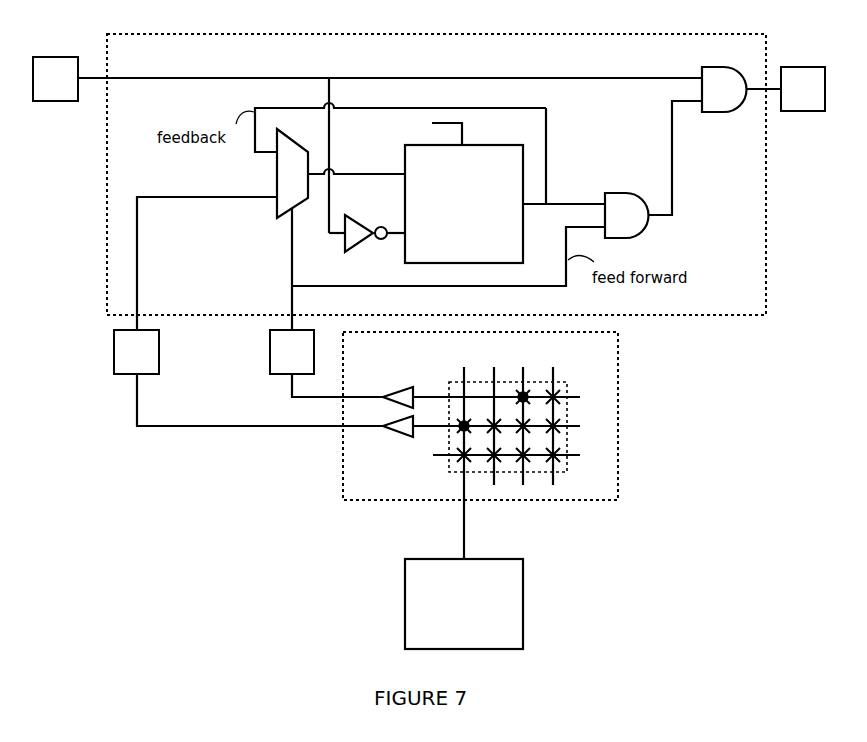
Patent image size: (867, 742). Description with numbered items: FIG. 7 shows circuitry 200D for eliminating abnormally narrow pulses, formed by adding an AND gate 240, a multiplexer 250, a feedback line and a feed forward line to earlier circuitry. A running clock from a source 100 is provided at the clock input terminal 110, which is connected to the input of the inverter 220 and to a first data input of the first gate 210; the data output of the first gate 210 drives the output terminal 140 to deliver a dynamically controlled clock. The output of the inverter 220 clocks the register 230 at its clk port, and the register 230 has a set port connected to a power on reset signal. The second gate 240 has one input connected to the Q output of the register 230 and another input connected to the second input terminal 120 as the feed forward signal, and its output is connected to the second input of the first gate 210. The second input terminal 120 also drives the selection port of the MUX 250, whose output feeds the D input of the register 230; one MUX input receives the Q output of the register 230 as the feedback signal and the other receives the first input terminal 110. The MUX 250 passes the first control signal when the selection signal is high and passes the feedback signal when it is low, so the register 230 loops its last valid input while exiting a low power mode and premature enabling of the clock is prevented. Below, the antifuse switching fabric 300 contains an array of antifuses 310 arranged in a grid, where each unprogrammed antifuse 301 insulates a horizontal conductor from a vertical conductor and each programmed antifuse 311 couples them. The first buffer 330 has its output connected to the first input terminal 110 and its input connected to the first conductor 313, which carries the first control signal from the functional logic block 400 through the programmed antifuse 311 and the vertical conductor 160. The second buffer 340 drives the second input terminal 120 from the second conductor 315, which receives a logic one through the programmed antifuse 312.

The input signal source 100 is at (71, 88).
The circuitry 200D is at (160, 61).
The first gate 210 is at (737, 98).
The output terminal 140 is at (818, 98).
The multiplexer 250 is at (276, 168).
The inverter 220 is at (350, 248).
The register 230 is at (477, 214).
The second gate 240 is at (640, 224).
The clock input terminal 110 is at (152, 361).
The second input terminal 120 is at (308, 361).
The antifuse switching fabric 300 is at (382, 359).
The unprogrammed antifuse 301 is at (556, 390).
The programmed antifuse 311 is at (462, 416).
The programmed antifuse 312 is at (521, 388).
The second conductor 315 is at (580, 397).
The first conductor 313 is at (580, 426).
The array of antifuses 310 is at (448, 462).
The second buffer 340 is at (398, 388).
The first buffer 330 is at (398, 436).
The conductor 160 is at (462, 504).
The functional logic block 400 is at (448, 635).